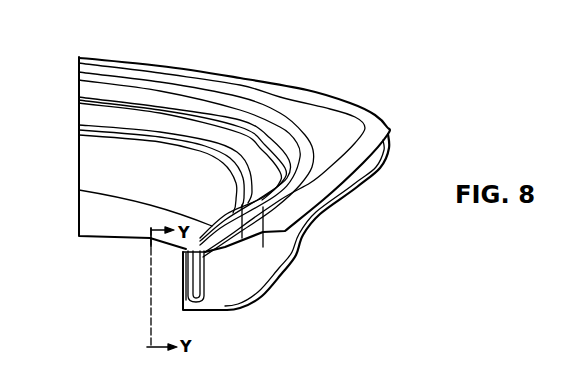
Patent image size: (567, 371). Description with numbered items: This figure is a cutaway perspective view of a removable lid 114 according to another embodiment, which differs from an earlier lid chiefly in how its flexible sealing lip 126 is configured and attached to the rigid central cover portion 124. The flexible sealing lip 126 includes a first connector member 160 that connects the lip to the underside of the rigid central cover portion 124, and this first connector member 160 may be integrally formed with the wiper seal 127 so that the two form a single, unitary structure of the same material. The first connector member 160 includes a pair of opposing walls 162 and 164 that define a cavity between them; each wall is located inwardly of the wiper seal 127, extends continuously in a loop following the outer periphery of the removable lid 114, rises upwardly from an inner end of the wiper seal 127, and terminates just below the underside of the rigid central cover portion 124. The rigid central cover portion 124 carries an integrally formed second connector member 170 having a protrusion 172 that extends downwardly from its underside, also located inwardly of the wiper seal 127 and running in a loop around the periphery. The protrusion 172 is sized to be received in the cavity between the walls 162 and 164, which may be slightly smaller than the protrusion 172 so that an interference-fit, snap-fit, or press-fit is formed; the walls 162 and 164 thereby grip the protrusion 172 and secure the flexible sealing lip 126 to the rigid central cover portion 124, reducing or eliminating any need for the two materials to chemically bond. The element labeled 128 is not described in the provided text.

The removable lid 114 is at (342, 62).
The rigid central cover portion 124 is at (163, 57).
The rim lip 128 is at (364, 145).
The flexible sealing lip 126 is at (340, 260).
The wiper seal 127 is at (288, 263).
The first connector member 160 is at (173, 294).
The wall 162 is at (233, 262).
The wall 164 is at (182, 281).
The second connector member 170 is at (176, 255).
The protrusion 172 is at (193, 272).